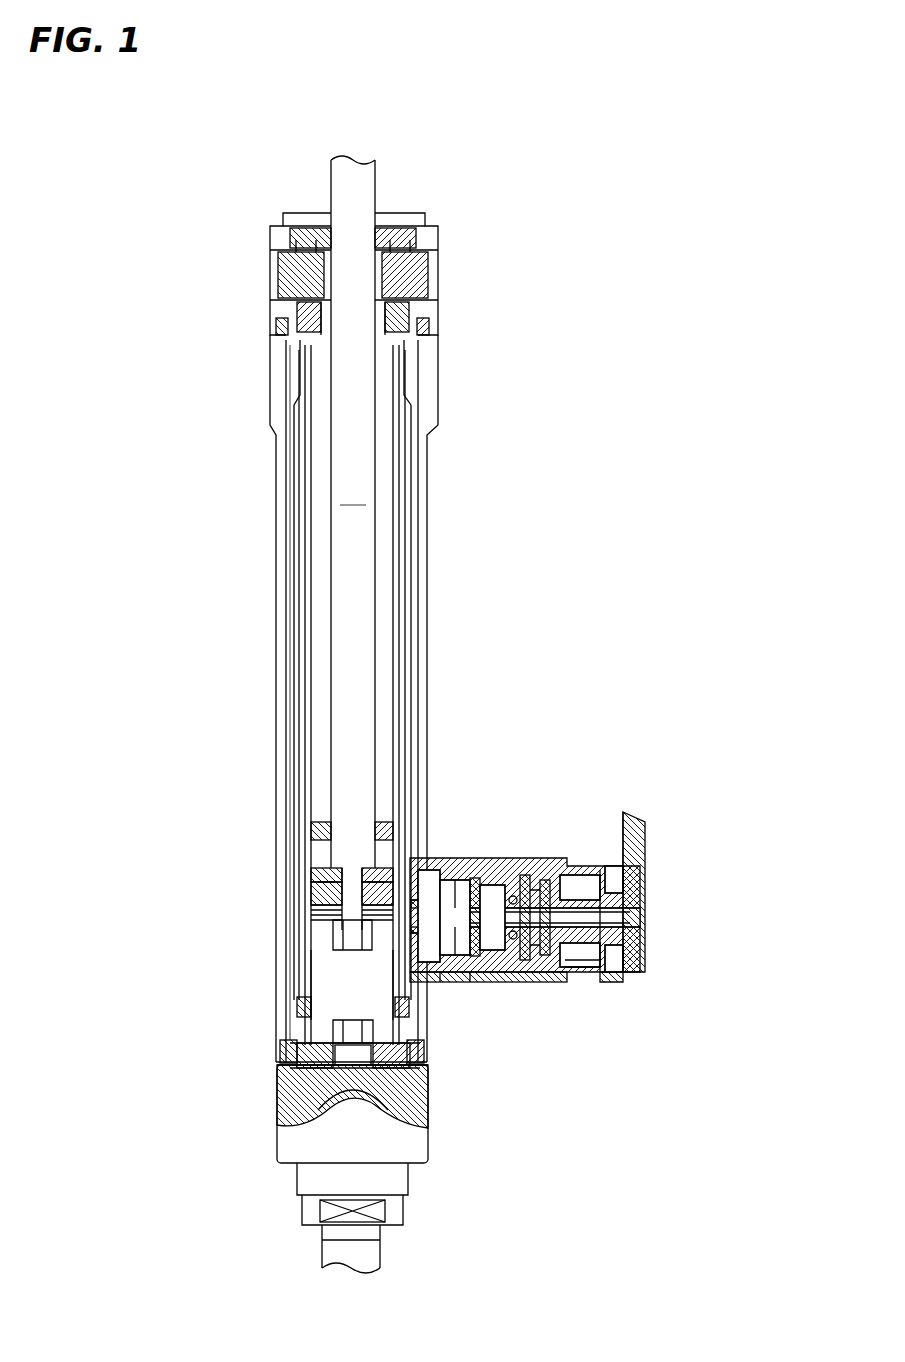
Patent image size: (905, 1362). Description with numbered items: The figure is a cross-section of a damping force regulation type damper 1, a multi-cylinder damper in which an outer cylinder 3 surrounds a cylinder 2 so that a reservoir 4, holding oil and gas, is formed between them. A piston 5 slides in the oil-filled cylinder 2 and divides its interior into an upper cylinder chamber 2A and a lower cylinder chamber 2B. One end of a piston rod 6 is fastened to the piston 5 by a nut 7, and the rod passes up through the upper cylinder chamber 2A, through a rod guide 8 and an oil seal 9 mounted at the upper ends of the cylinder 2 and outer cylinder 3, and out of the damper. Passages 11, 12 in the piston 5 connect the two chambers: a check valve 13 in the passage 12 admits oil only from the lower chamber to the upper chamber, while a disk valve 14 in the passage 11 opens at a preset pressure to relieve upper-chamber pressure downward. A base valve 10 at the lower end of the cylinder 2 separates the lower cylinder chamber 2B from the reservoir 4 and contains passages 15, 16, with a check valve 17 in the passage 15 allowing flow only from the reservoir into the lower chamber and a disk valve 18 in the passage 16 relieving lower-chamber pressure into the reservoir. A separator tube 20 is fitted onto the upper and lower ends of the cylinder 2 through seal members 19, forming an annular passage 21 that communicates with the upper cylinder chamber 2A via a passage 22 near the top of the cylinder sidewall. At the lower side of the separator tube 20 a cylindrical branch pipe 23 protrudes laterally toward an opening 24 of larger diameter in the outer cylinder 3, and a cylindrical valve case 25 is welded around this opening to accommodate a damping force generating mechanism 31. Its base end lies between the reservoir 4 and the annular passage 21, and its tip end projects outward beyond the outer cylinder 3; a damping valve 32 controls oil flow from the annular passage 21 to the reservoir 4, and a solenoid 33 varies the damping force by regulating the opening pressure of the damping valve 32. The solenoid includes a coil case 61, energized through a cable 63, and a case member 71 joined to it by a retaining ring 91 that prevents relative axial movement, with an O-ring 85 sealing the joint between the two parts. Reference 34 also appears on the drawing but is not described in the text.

The damping force regulation type damper 1 is at (535, 257).
The cylinder 2 is at (400, 462).
The upper cylinder chamber 2A is at (385, 508).
The lower cylinder chamber 2B is at (300, 975).
The outer cylinder 3 is at (426, 546).
The reservoir 4 is at (282, 538).
The piston 5 is at (310, 895).
The piston rod 6 is at (368, 174).
The nut 7 is at (340, 935).
The rod guide 8 is at (288, 306).
The oil seal 9 is at (420, 240).
The base valve 10 is at (430, 1065).
The passage 11 is at (305, 875).
The passage 12 is at (440, 862).
The check valve 13 is at (418, 860).
The disk valve 14 is at (305, 915).
The passage 15 is at (283, 1072).
The passage 16 is at (428, 1100).
The check valve 17 is at (287, 1047).
The disk valve 18 is at (428, 1130).
The seal members 19 is at (278, 333).
The separator tube 20 is at (290, 600).
The annular passage 21 is at (412, 584).
The passage 22 is at (412, 372).
The branch pipe 23 is at (460, 862).
The opening 24 is at (428, 985).
The valve case 25 is at (490, 862).
The damping force generating mechanism 31 is at (613, 996).
The damping valve 32 is at (492, 866).
The solenoid 33 is at (595, 858).
The valve case flange 34 is at (455, 990).
The coil case 61 is at (645, 965).
The cable 63 is at (640, 832).
The case member 71 is at (575, 982).
The O-ring 85 is at (617, 985).
The retaining ring 91 is at (600, 982).